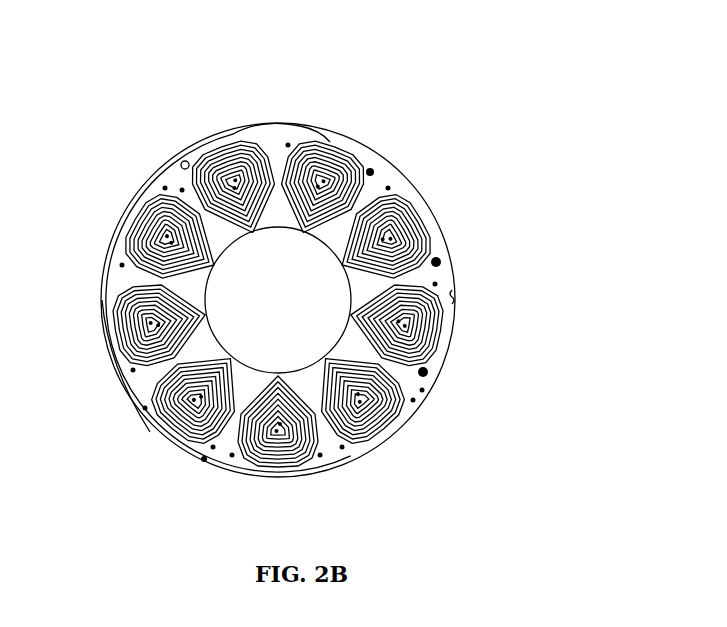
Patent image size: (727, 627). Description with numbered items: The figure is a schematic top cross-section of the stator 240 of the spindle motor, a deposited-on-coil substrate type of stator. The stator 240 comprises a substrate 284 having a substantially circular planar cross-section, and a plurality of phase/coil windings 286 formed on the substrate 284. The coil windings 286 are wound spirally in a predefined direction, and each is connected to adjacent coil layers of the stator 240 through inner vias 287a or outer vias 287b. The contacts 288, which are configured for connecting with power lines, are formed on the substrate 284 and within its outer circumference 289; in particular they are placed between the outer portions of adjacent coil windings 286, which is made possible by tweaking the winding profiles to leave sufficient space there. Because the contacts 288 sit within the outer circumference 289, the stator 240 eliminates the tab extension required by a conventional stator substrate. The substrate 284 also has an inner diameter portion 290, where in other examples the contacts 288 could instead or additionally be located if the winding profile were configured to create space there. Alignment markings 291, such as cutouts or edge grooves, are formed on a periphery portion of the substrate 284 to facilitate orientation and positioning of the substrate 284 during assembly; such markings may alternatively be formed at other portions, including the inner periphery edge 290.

The stator 240 is at (318, 88).
The substrate 284 is at (142, 412).
The coil windings 286 is at (302, 448).
The inner vias 287a is at (233, 193).
The outer vias 287b is at (127, 372).
The contacts 288 is at (428, 368).
The outer circumference 289 is at (222, 135).
The inner diameter portion 290 is at (223, 247).
The alignment markings 291 is at (206, 462).